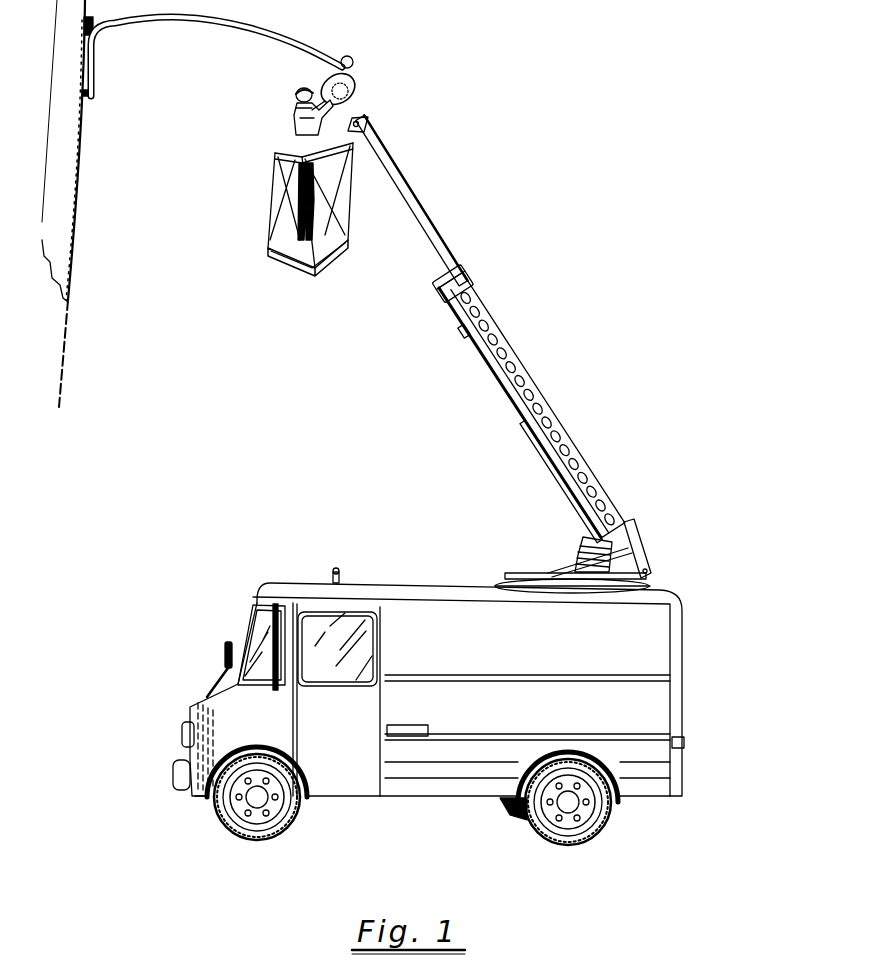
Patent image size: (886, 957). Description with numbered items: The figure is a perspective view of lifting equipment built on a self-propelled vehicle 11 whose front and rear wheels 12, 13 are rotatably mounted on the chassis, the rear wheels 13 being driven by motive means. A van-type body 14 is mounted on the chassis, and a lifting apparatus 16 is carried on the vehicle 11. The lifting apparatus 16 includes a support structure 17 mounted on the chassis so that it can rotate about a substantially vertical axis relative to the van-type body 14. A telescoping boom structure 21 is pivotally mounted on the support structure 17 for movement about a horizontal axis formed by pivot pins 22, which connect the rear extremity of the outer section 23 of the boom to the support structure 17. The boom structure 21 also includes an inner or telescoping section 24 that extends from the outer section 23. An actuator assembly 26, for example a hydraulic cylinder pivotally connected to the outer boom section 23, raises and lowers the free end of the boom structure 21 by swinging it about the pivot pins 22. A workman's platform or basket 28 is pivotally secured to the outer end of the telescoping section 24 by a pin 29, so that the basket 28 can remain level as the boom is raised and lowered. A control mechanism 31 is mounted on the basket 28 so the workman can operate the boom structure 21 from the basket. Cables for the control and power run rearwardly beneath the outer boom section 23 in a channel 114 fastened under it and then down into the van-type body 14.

The self-propelled vehicle 11 is at (431, 715).
The front wheels 12 is at (273, 823).
The rear wheels 13 is at (593, 823).
The van-type body 14 is at (680, 632).
The lifting apparatus 16 is at (530, 346).
The support structure 17 is at (508, 578).
The boom structure 21 is at (473, 357).
The pivot pins 22 is at (650, 577).
The outer section 23 is at (545, 405).
The inner or telescoping section 24 is at (424, 232).
The actuator assembly 26 is at (580, 547).
The workman's platform or basket 28 is at (306, 258).
The pin 29 is at (360, 121).
The control mechanism 31 is at (313, 133).
The channel 114 is at (537, 447).